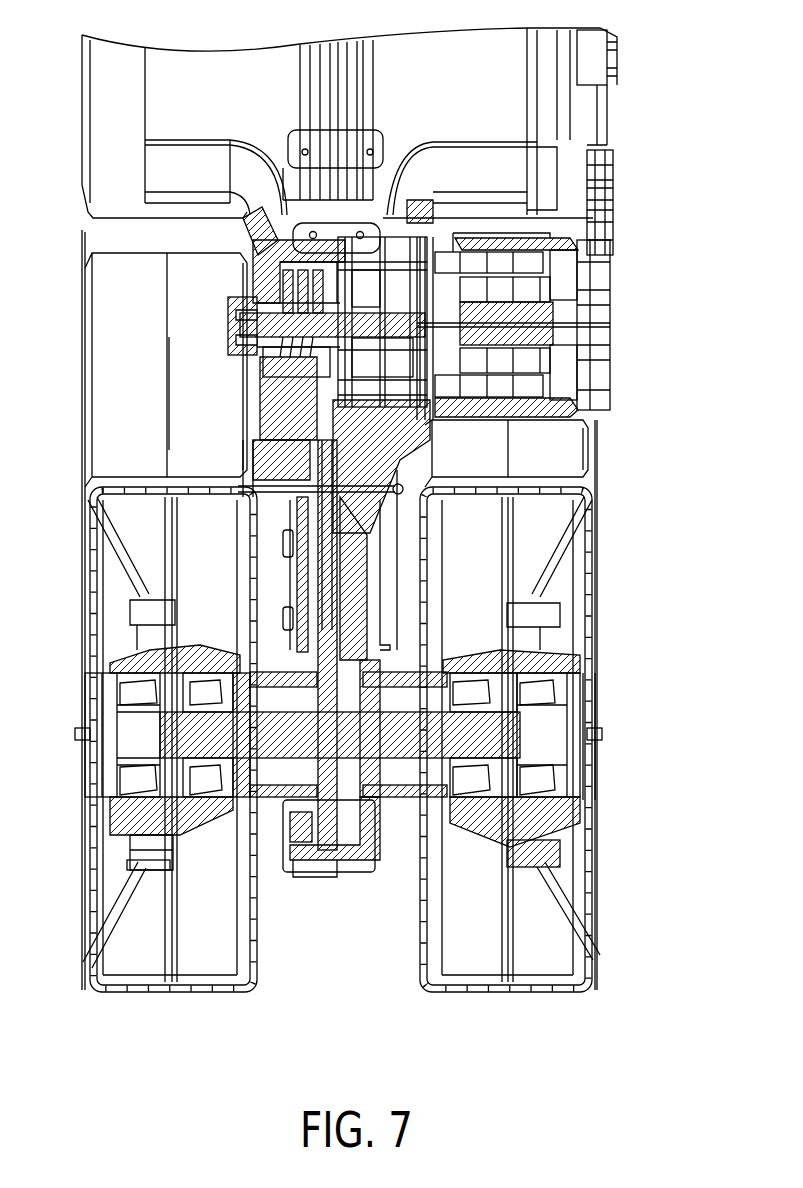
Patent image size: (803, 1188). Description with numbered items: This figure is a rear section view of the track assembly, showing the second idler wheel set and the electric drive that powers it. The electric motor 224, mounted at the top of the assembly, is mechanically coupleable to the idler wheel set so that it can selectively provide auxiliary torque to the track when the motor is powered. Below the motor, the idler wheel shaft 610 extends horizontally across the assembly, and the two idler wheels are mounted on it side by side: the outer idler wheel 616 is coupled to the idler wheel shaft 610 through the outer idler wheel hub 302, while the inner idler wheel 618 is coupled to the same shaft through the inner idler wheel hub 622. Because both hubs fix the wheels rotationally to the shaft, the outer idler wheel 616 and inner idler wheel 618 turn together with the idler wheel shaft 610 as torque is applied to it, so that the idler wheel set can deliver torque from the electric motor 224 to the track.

The electric motor 224 is at (592, 462).
The outer idler wheel hub 302 is at (140, 820).
The idler wheel shaft 610 is at (487, 722).
The outer idler wheel 616 is at (102, 928).
The inner idler wheel 618 is at (593, 943).
The inner idler wheel hub 622 is at (523, 817).